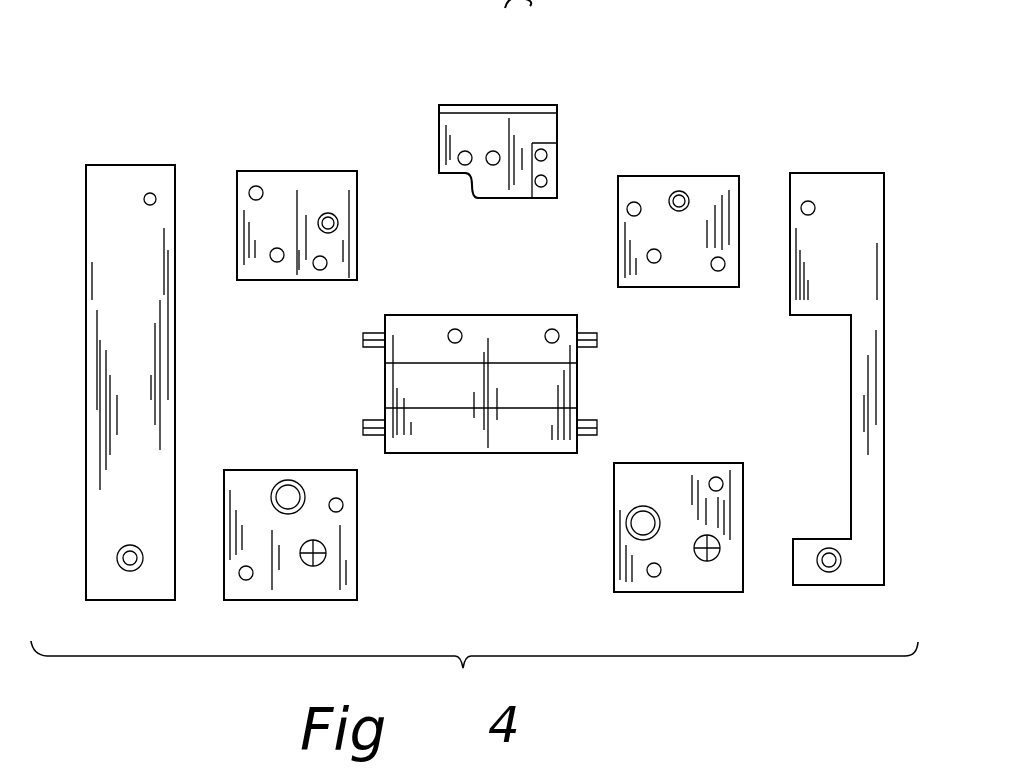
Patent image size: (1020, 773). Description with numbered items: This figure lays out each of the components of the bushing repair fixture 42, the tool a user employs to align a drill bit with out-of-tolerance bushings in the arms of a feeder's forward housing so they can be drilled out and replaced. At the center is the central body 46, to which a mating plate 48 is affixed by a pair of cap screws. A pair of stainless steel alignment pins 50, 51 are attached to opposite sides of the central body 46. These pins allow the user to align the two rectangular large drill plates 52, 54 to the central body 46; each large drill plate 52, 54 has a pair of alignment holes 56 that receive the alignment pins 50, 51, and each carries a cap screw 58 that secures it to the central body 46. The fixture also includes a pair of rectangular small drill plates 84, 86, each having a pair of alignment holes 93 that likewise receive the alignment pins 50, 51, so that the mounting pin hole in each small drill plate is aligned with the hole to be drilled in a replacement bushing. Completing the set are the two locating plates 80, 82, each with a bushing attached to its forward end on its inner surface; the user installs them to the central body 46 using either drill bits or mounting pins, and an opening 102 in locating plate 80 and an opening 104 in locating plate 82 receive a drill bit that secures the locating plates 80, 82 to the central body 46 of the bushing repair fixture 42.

The bushing repair fixture 42 is at (612, 86).
The central body 46 is at (427, 315).
The mating plate 48 is at (465, 105).
The alignment pin 50 is at (597, 340).
The alignment pin 51 is at (597, 428).
The large drill plate 52 is at (248, 470).
The large drill plate 54 is at (674, 463).
The alignment hole 56 is at (241, 567).
The cap screw 58 is at (326, 553).
The locating plate 80 is at (88, 445).
The locating plate 82 is at (845, 173).
The small drill plate 84 is at (276, 171).
The small drill plate 86 is at (645, 176).
The alignment hole 93 is at (258, 186).
The opening 102 is at (152, 192).
The opening 104 is at (810, 201).